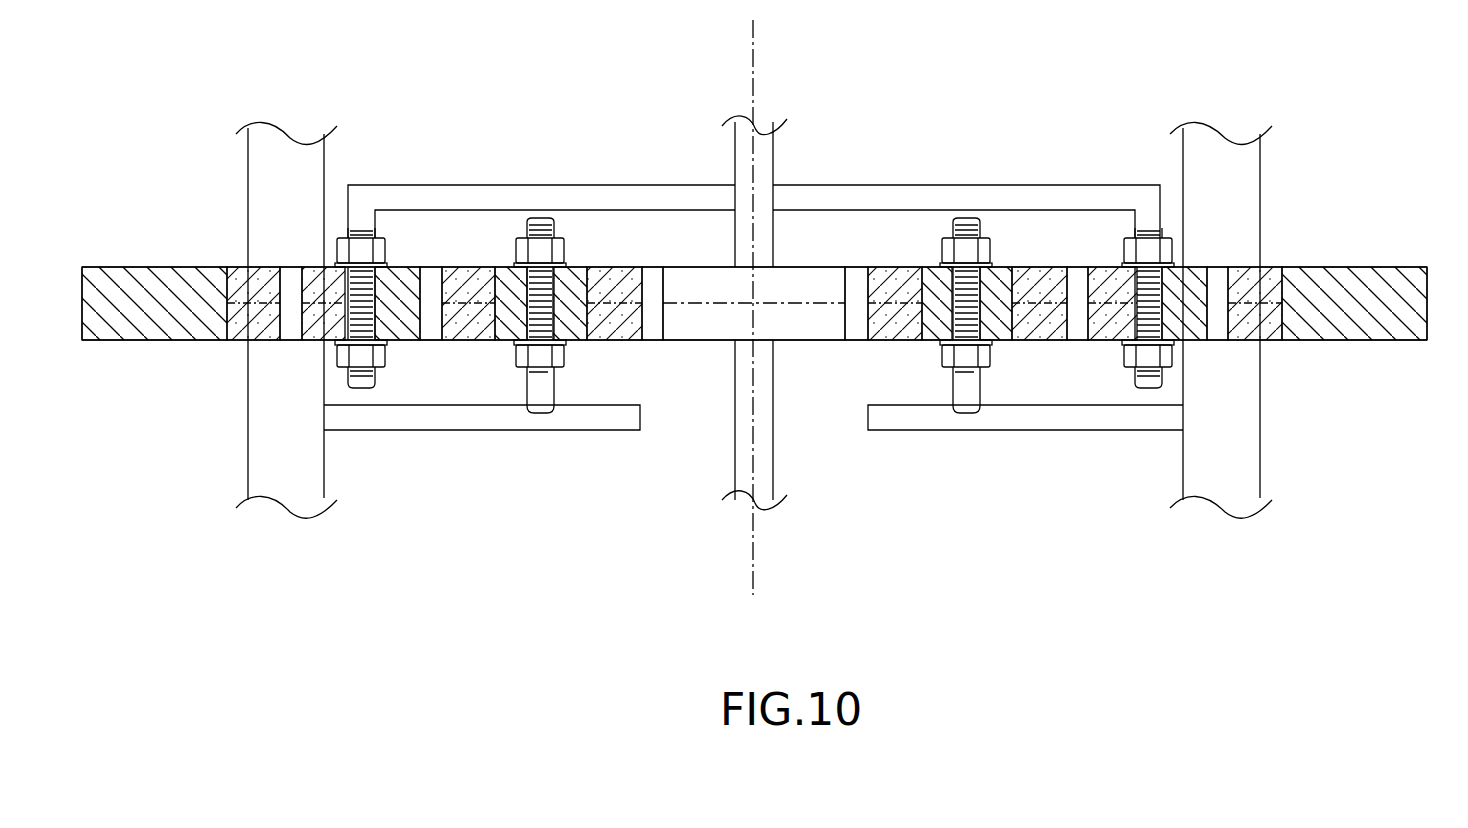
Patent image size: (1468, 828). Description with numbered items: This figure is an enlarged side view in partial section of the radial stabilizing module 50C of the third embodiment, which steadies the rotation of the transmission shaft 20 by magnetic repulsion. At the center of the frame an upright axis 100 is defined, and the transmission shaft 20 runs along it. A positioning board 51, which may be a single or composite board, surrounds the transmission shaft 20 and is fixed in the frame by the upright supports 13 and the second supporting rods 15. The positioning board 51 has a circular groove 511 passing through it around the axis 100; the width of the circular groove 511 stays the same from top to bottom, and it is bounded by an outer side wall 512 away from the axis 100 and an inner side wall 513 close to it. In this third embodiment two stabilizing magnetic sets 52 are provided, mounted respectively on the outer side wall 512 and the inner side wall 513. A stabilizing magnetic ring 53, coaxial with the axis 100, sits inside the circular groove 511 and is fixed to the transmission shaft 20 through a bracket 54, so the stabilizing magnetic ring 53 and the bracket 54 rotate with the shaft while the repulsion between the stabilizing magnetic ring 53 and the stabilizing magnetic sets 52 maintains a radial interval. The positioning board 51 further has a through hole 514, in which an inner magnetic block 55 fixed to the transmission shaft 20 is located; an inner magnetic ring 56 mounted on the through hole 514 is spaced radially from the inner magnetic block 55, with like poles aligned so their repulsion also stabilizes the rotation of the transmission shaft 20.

The axis 100 is at (755, 90).
The supports 13 is at (265, 430).
The second supporting rods 15 is at (455, 420).
The transmission shaft 20 is at (768, 158).
The radial stabilizing module 50C is at (1362, 186).
The positioning board 51 is at (1360, 268).
The circular groove 511 is at (1218, 270).
The outer side wall 512 is at (1275, 342).
The inner side wall 513 is at (1015, 334).
The through hole 514 is at (857, 264).
The stabilizing magnetic set 52 is at (1270, 264).
The stabilizing magnetic ring 53 is at (1103, 264).
The bracket 54 is at (457, 195).
The inner magnetic block 55 is at (703, 262).
The inner magnetic ring 56 is at (897, 264).